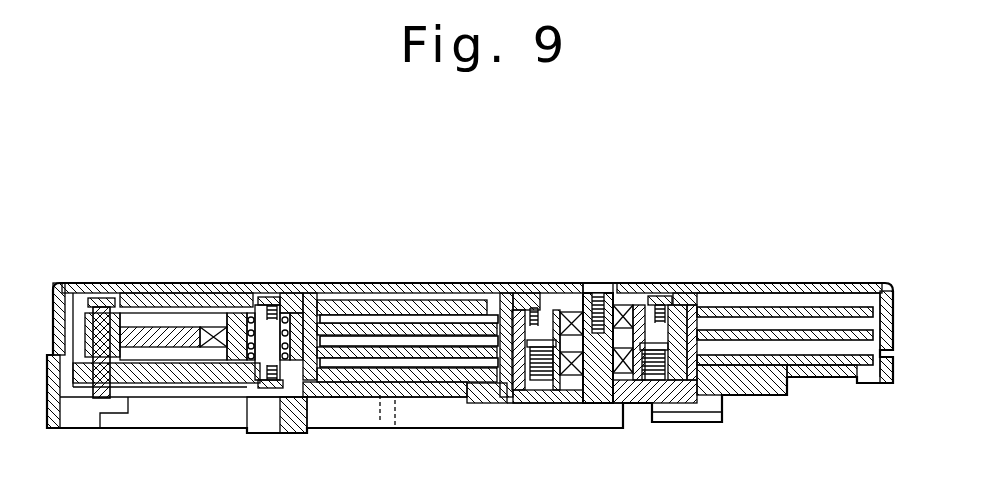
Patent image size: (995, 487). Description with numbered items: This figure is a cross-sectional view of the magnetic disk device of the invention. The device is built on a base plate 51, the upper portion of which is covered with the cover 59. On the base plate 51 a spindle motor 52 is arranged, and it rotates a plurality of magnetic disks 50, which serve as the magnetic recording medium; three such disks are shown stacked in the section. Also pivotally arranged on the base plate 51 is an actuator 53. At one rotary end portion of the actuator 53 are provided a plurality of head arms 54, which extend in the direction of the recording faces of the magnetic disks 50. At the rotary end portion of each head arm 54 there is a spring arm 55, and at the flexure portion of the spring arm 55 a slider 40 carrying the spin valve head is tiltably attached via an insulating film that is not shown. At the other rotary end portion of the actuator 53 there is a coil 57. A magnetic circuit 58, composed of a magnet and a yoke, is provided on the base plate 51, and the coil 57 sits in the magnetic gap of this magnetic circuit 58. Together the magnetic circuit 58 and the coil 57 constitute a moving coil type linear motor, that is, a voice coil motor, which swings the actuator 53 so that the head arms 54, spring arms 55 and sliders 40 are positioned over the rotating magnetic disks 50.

The magnetic circuit 58 is at (137, 265).
The coil 57 is at (158, 332).
The cover 59 is at (297, 290).
The head arms 54 is at (397, 323).
The spring arm 55 is at (470, 315).
The slider 40 is at (478, 310).
The spindle motor 52 is at (708, 300).
The magnetic disks 50 is at (812, 305).
The actuator 53 is at (344, 392).
The base plate 51 is at (388, 385).